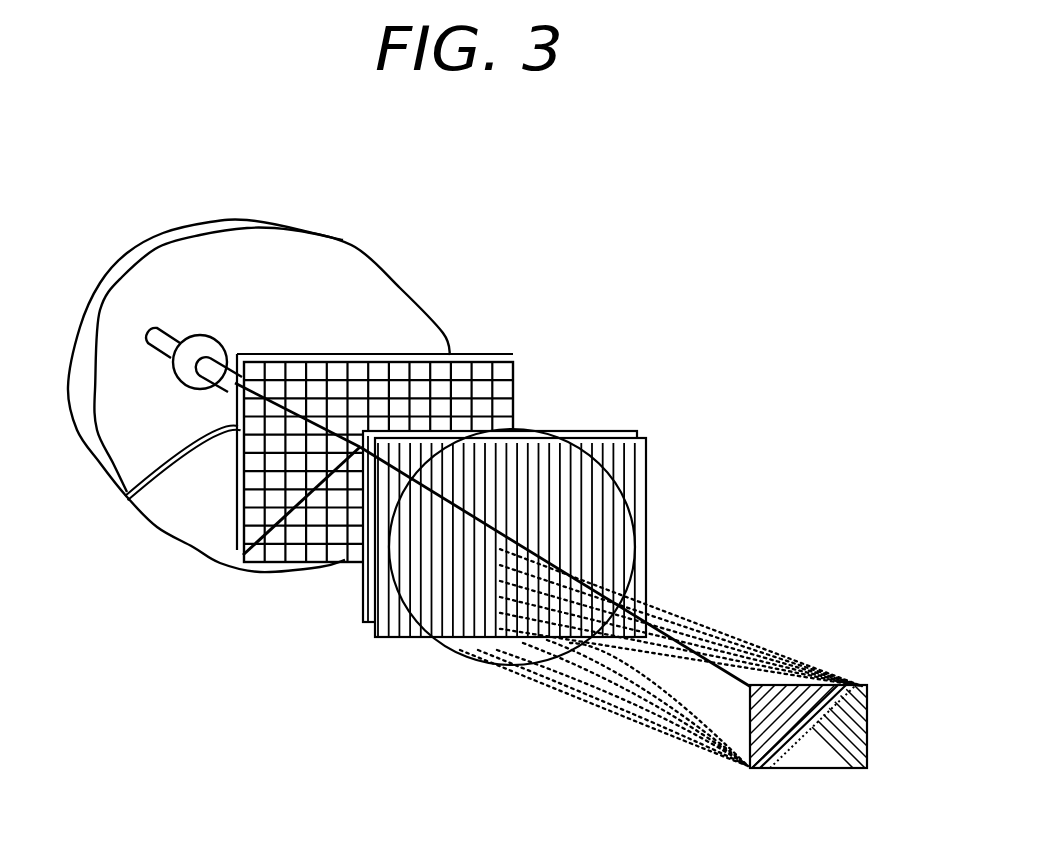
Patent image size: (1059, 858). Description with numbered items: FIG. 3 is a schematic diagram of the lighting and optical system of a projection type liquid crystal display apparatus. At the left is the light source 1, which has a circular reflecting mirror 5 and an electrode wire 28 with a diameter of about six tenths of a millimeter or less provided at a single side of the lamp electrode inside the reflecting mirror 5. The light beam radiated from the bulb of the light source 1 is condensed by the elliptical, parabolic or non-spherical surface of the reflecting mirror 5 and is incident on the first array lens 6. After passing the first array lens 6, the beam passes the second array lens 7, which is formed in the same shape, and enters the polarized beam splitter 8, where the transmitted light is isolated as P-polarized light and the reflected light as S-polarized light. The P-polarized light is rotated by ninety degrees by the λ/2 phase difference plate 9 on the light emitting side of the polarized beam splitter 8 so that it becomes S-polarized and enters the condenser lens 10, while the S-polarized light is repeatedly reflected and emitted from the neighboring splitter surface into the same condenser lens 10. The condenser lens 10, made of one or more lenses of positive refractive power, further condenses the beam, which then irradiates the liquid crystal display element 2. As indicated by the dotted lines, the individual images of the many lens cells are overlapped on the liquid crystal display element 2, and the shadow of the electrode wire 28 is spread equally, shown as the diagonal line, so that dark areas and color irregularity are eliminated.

The light source 1 is at (207, 333).
The liquid crystal display element 2 is at (868, 686).
The reflecting mirror 5 is at (355, 247).
The first array lens 6 is at (505, 357).
The second array lens 7 is at (636, 431).
The polarized beam splitter 8 is at (650, 440).
The λ/2 phase difference plate 9 is at (393, 639).
The condenser lens 10 is at (469, 662).
The electrode wire 28 is at (157, 485).